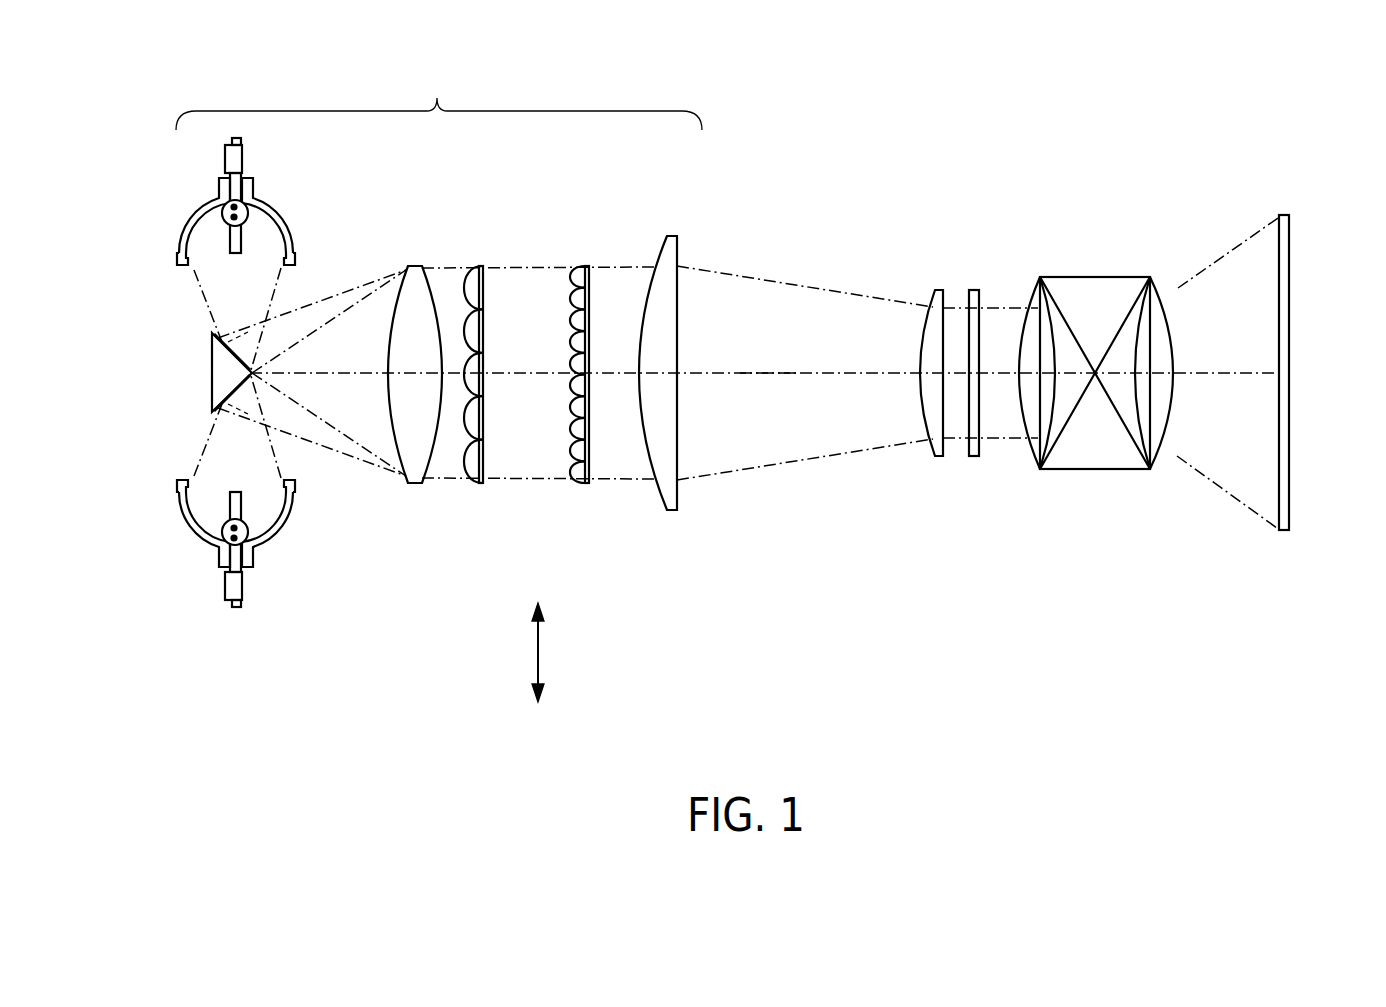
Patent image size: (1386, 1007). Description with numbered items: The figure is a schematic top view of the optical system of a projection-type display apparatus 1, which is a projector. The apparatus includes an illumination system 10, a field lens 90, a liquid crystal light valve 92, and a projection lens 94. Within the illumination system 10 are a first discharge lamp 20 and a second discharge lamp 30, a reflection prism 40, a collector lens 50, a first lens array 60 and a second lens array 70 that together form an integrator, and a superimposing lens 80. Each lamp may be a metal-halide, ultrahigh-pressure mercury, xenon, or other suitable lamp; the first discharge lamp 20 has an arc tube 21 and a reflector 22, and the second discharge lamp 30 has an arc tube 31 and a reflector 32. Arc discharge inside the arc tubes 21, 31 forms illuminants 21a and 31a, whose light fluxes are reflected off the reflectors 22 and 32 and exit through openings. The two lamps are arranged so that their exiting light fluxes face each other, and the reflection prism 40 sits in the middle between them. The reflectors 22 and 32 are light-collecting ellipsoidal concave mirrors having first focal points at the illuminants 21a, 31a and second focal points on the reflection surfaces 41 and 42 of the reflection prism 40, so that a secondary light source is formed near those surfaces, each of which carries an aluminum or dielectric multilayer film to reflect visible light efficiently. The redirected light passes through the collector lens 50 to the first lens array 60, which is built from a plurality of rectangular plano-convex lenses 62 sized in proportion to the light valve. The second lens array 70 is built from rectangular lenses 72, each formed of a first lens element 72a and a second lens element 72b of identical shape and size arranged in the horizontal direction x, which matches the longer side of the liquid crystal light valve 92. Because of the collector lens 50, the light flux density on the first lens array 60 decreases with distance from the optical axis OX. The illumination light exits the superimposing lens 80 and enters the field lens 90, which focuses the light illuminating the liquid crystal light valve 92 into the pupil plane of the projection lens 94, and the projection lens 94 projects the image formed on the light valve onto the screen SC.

The projection-type display apparatus 1 is at (818, 128).
The illumination system 10 is at (439, 99).
The first discharge lamp 20 is at (280, 173).
The arc tube 21 is at (241, 242).
The illuminant 21a is at (246, 218).
The reflector 22 is at (200, 205).
The second discharge lamp 30 is at (280, 580).
The arc tube 31 is at (241, 505).
The illuminant 31a is at (246, 531).
The reflector 32 is at (200, 540).
The reflection prism 40 is at (212, 373).
The reflection surface 41 is at (226, 340).
The reflection surface 42 is at (226, 405).
The collector lens 50 is at (420, 262).
The first lens array 60 is at (480, 262).
The rectangular lens 62 is at (466, 418).
The second lens array 70 is at (586, 262).
The rectangular lens 72 is at (590, 533).
The first lens element 72a is at (572, 447).
The second lens element 72b is at (576, 470).
The superimposing lens 80 is at (675, 234).
The field lens 90 is at (938, 288).
The liquid crystal light valve 92 is at (975, 288).
The projection lens 94 is at (1133, 277).
The optical axis OX is at (767, 372).
The screen SC is at (1278, 238).
The horizontal direction x is at (553, 652).